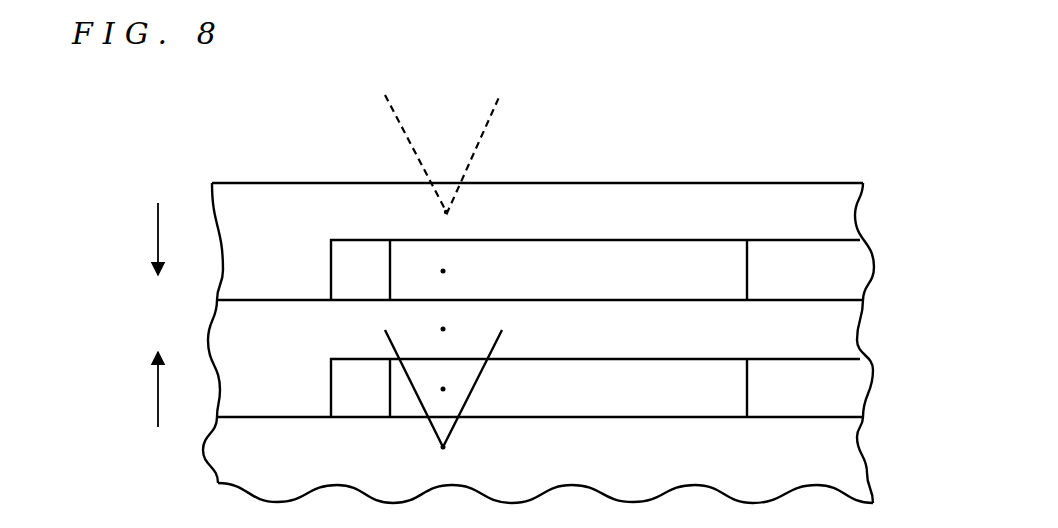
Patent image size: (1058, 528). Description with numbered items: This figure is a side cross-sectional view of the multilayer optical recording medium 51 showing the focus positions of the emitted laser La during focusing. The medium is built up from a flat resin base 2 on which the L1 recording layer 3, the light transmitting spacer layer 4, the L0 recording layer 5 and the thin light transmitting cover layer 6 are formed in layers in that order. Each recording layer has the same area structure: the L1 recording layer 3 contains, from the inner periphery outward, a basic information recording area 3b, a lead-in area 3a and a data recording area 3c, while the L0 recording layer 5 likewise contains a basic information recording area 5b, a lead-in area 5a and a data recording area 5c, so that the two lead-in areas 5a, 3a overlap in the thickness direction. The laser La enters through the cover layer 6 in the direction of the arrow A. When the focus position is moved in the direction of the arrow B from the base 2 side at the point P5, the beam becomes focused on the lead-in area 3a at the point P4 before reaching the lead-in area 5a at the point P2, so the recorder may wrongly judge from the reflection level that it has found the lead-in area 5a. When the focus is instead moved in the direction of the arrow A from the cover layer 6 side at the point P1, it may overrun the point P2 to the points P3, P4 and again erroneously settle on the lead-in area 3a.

The base 2 is at (843, 463).
The L1 recording layer 3 is at (843, 390).
The lead-in area 3a is at (521, 400).
The basic information recording area 3b is at (357, 376).
The data recording area 3c is at (829, 401).
The spacer layer 4 is at (843, 328).
The L0 recording layer 5 is at (843, 271).
The lead-in area 5a is at (521, 283).
The basic information recording area 5b is at (357, 257).
The data recording area 5c is at (829, 284).
The cover layer 6 is at (843, 213).
The multilayer optical recording medium 51 is at (553, 81).
The laser La is at (410, 150).
The point P1 is at (444, 212).
The point P2 is at (443, 271).
The point P3 is at (443, 329).
The point P4 is at (443, 389).
The point P5 is at (443, 448).
The arrow A is at (142, 239).
The arrow B is at (142, 389).